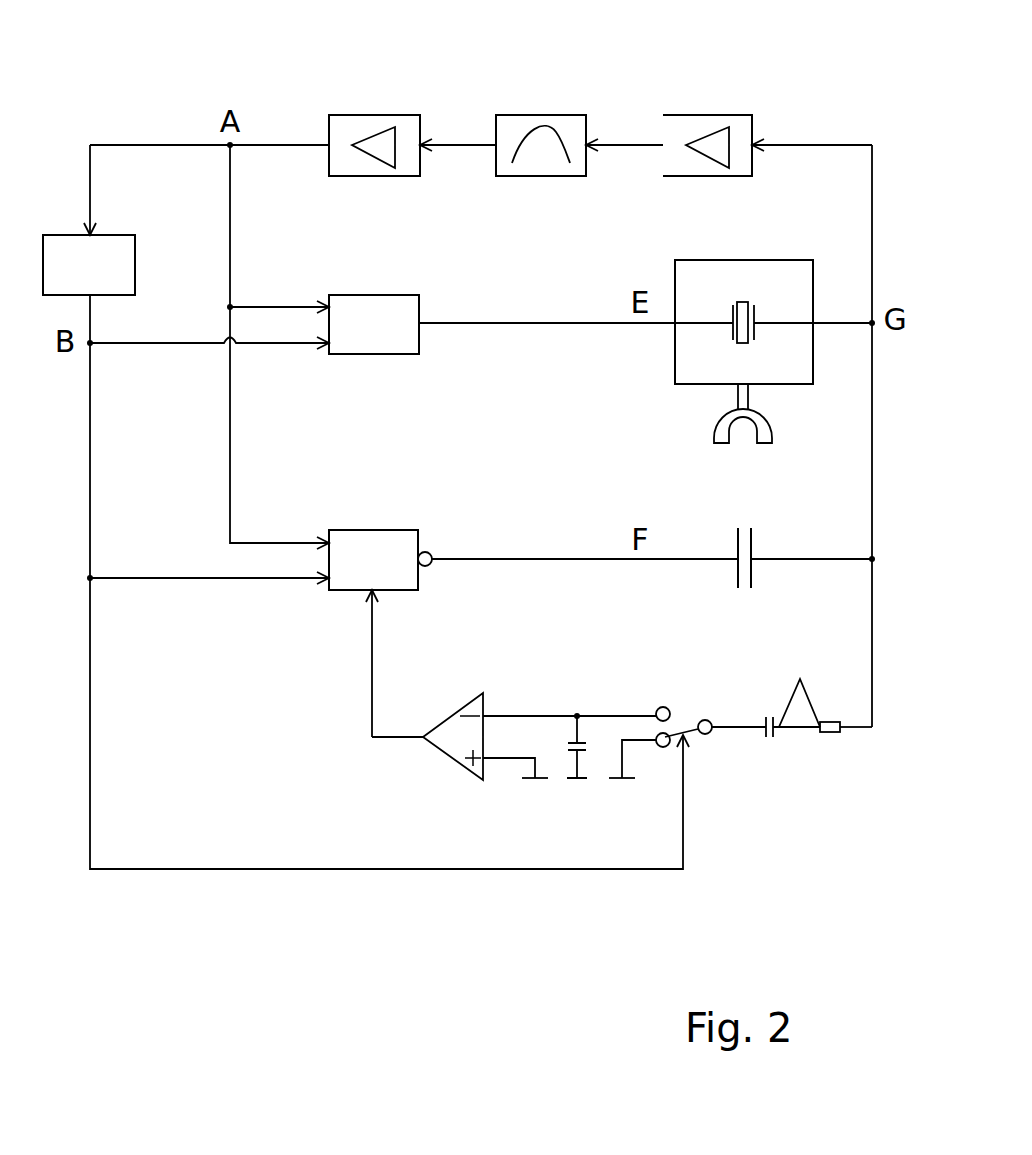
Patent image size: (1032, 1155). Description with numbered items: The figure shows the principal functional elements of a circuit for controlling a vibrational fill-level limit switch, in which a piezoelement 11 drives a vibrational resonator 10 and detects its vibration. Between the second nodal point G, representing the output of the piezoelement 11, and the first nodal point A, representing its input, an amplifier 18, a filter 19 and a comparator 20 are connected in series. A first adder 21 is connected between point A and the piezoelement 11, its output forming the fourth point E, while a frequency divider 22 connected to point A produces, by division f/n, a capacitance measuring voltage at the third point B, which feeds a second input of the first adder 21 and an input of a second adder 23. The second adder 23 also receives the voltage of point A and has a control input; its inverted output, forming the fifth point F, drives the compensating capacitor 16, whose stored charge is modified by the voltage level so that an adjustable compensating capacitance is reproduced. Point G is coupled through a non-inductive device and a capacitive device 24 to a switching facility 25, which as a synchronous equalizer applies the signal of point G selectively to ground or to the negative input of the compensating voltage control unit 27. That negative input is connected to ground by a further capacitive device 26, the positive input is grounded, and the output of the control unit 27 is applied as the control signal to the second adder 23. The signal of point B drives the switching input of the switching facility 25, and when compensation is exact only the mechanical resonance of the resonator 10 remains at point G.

The vibrational resonator 10 is at (714, 428).
The piezoelement 11 is at (790, 260).
The compensating capacitor 16 is at (752, 548).
The amplifier 18 is at (718, 115).
The filter 19 is at (550, 115).
The comparator 20 is at (386, 115).
The first adder 21 is at (386, 295).
The frequency divider 22 is at (114, 235).
The second adder 23 is at (386, 530).
The capacitive device 24 is at (803, 689).
The switching facility 25 is at (690, 732).
The capacitive device 26 is at (580, 755).
The compensating voltage control unit 27 is at (460, 706).